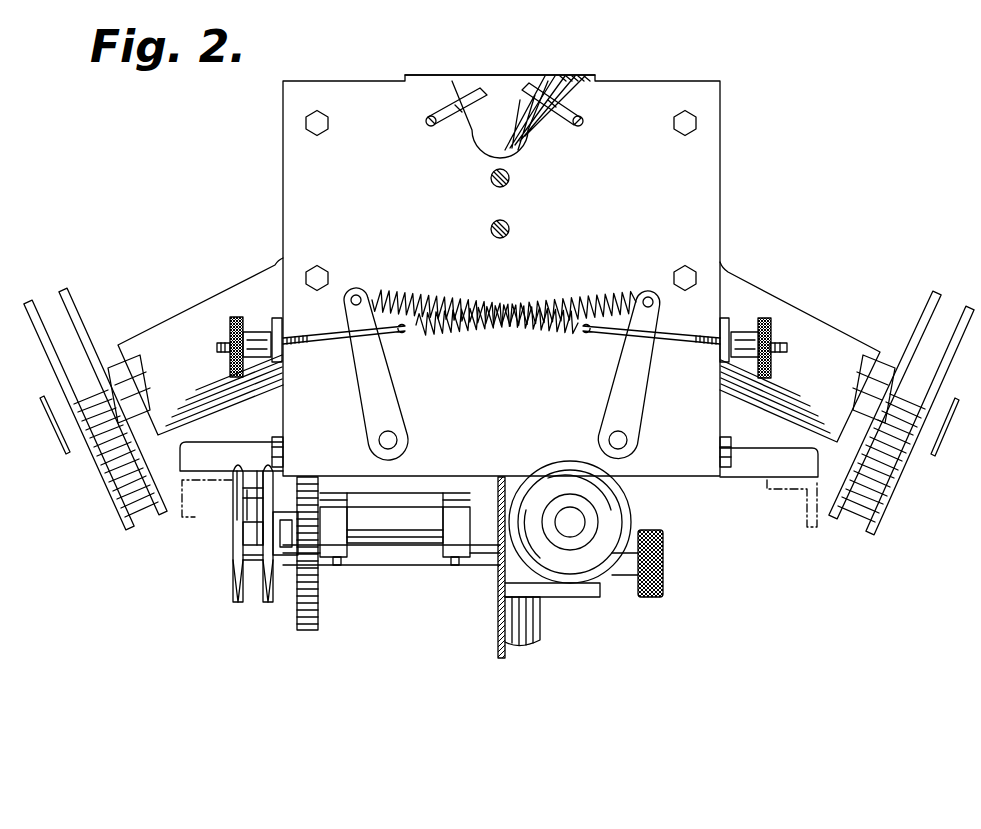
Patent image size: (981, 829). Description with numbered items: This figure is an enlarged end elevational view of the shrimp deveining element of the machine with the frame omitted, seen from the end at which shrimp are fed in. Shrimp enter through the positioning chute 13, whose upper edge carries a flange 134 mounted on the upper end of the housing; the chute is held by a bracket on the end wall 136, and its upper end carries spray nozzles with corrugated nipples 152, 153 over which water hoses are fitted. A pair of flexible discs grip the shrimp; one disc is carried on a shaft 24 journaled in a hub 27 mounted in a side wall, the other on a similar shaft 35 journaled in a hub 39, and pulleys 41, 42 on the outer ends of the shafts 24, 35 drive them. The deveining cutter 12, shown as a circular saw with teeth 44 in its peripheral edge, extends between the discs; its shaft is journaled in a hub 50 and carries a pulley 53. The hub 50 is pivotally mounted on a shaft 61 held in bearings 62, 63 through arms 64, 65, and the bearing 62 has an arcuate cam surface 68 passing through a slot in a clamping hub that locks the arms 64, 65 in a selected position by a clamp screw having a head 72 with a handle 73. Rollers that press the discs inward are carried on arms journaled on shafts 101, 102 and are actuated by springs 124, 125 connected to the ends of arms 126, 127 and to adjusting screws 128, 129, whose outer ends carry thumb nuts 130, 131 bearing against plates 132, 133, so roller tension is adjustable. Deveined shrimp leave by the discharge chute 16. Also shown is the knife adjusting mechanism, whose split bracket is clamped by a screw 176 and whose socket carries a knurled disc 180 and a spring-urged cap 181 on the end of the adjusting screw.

The deveining cutter 12 is at (512, 622).
The positioning chute 13 is at (511, 76).
The discharge chute 16 is at (490, 608).
The shaft 24 is at (937, 426).
The hub 27 is at (830, 322).
The shaft 35 is at (65, 429).
The hub 39 is at (173, 323).
The pulley 41 is at (930, 309).
The pulley 42 is at (73, 314).
The teeth 44 is at (494, 656).
The hub 50 is at (384, 573).
The pulley 53 is at (235, 591).
The shaft 61 is at (412, 529).
The bearing 62 is at (325, 501).
The bearing 63 is at (472, 501).
The arm 64 is at (337, 565).
The arm 65 is at (455, 565).
The arcuate cam surface 68 is at (312, 632).
The head 72 is at (233, 540).
The handle 73 is at (240, 507).
The shaft 101 is at (606, 445).
The shaft 102 is at (402, 445).
The spring 124 is at (594, 300).
The spring 125 is at (435, 296).
The arm 126 is at (620, 373).
The arm 127 is at (388, 384).
The adjusting screw 128 is at (340, 334).
The adjusting screw 129 is at (683, 338).
The thumb nut 130 is at (233, 333).
The thumb nut 131 is at (772, 331).
The plate 132 is at (272, 318).
The plate 133 is at (733, 318).
The flange 134 is at (409, 78).
The end wall 136 is at (718, 130).
The corrugated nipple 152 is at (562, 110).
The corrugated nipple 153 is at (452, 110).
The screw 176 is at (663, 558).
The knurled disc 180 is at (628, 505).
The cap 181 is at (560, 538).